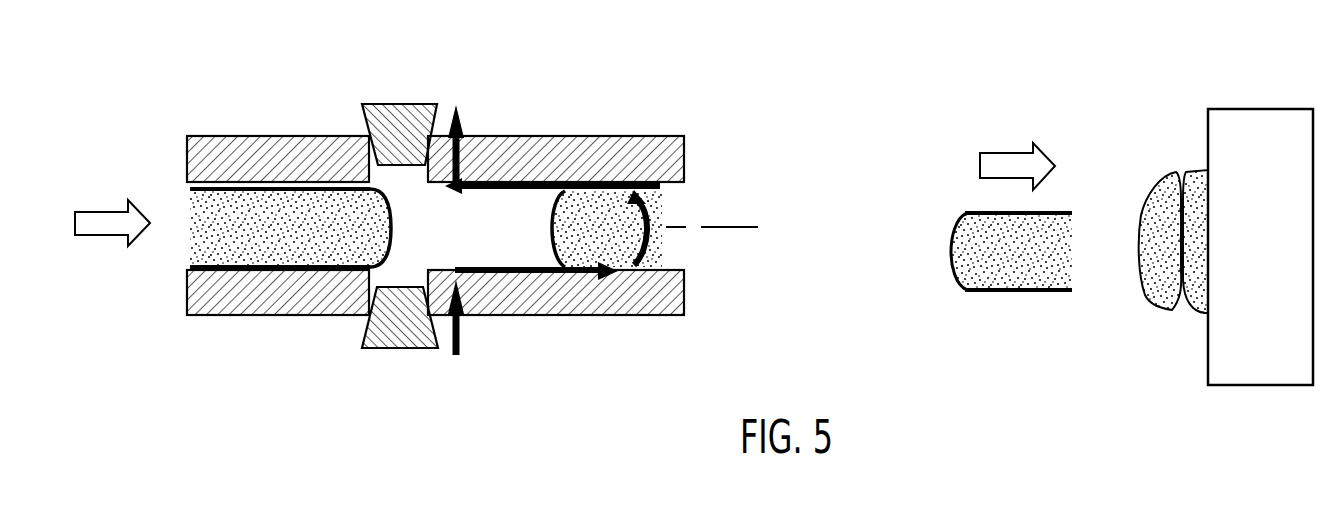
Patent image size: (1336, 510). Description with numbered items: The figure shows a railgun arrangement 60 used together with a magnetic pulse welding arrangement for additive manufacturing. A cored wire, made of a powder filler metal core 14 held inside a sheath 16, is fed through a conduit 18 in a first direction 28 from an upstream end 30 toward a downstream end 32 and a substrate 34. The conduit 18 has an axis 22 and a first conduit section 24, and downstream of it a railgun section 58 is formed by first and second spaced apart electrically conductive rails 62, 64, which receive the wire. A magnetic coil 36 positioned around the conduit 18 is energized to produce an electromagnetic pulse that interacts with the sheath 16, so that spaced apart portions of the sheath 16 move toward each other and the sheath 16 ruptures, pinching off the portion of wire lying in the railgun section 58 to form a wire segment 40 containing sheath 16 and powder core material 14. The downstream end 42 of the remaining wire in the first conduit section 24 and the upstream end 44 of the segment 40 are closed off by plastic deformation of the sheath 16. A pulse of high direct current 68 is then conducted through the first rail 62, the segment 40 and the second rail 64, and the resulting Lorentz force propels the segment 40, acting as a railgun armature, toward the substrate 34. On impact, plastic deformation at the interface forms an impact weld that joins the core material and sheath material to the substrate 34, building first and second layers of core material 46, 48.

The powder filler metal core 14 is at (205, 246).
The sheath 16 is at (245, 190).
The conduit 18 is at (190, 150).
The axis 22 is at (745, 227).
The first conduit section 24 is at (288, 310).
The first direction 28 is at (102, 222).
The upstream end 30 is at (97, 143).
The downstream end 32 is at (787, 118).
The substrate 34 is at (1208, 127).
The magnetic coil 36 is at (393, 126).
The wire segment 40 is at (680, 255).
The downstream end 42 is at (393, 228).
The upstream end 44 is at (553, 222).
The first layer of core material 46 is at (1195, 313).
The second layer of core material 48 is at (1155, 305).
The railgun section 58 is at (505, 100).
The railgun arrangement 60 is at (680, 72).
The first conductive rail 62 is at (540, 308).
The second conductive rail 64 is at (600, 148).
The pulse of high direct current 68 is at (465, 335).